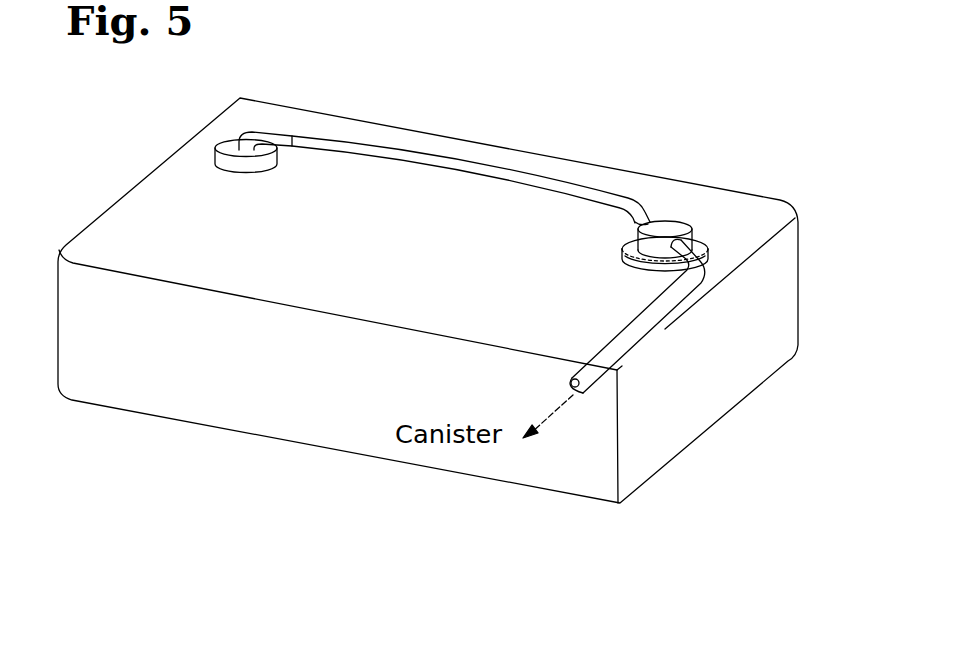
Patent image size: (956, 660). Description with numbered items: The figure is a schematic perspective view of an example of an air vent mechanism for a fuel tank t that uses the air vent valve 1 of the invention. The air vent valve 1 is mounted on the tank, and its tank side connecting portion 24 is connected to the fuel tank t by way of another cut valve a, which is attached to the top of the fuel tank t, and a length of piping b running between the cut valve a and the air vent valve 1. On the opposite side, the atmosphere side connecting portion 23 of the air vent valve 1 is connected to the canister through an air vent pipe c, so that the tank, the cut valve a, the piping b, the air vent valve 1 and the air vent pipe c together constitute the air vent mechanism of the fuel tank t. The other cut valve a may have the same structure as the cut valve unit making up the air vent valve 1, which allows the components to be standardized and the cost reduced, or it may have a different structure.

The fuel tank t is at (375, 310).
The other cut valve a is at (236, 141).
The piping b is at (473, 167).
The air vent pipe c is at (650, 325).
The tank side connecting portion 24 is at (662, 208).
The air vent valve 1 is at (690, 240).
The atmosphere side connecting portion 23 is at (712, 246).